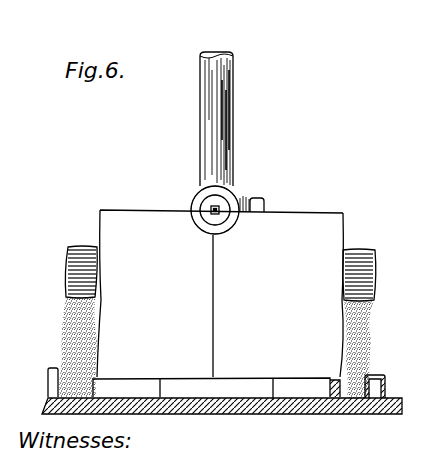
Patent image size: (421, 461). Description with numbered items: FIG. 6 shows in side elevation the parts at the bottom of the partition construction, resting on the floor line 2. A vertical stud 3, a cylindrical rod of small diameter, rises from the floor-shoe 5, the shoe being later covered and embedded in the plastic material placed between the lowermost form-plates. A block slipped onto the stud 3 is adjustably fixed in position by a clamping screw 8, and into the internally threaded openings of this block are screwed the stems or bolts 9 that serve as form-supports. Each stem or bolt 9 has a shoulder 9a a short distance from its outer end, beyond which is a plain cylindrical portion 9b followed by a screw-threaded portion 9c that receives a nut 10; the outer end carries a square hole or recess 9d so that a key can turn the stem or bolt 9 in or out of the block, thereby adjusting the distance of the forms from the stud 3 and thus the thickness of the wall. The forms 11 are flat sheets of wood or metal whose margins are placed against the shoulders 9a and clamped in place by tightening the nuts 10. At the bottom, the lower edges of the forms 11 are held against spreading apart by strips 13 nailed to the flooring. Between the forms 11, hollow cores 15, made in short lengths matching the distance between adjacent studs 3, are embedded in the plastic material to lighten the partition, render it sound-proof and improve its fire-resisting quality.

The floor line 2 is at (395, 398).
The stud 3 is at (234, 121).
The floor-shoe 5 is at (383, 375).
The clamping screw 8 is at (266, 201).
The stem or bolt 9 is at (237, 191).
The shoulder 9a is at (200, 194).
The plain cylindrical portion 9b is at (200, 214).
The screw-threaded portion 9c is at (208, 218).
The square hole or recess 9d is at (219, 213).
The nut 10 is at (379, 312).
The form 11 is at (100, 212).
The strip 13 is at (308, 402).
The hollow form or core 15 is at (67, 258).